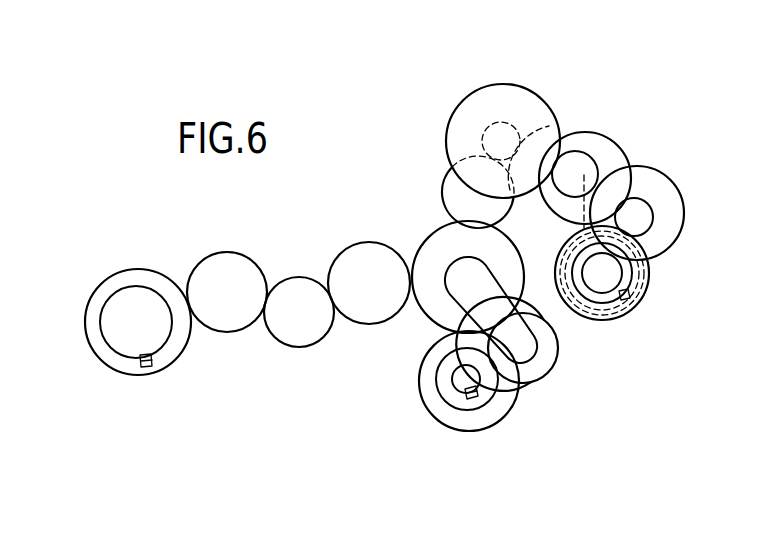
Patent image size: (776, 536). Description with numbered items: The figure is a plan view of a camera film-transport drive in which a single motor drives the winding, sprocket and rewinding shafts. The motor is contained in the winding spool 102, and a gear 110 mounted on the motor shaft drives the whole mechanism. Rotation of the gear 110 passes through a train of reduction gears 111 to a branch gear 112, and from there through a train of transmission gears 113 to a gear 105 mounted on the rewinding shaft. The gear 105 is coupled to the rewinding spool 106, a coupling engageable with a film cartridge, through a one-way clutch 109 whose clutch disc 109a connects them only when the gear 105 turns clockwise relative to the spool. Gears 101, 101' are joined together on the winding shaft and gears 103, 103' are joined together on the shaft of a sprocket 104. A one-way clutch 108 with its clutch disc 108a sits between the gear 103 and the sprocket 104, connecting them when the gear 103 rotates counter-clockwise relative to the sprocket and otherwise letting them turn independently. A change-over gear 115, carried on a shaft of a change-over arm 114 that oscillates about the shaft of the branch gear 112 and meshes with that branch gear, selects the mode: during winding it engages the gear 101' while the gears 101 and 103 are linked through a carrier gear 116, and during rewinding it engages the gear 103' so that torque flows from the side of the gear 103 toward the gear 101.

The gear 101 is at (601, 236).
The gear 101' is at (616, 302).
The winding spool 102 is at (630, 298).
The gear 103 is at (444, 381).
The gear 103' is at (419, 381).
The sprocket 104 is at (478, 382).
The gear 105 is at (83, 316).
The rewinding spool 106 is at (131, 297).
The one-way clutch 108 is at (463, 395).
The clutch disc 108a is at (469, 400).
The one-way clutch 109 is at (150, 360).
The clutch disc 109a is at (148, 372).
The gear 110 is at (633, 276).
The train of reduction gears 111 is at (720, 205).
The branch gear 112 is at (428, 243).
The train of transmission gears 113 is at (410, 243).
The change-over arm 114 is at (457, 291).
The change-over gear 115 is at (552, 370).
The carrier gear 116 is at (613, 384).